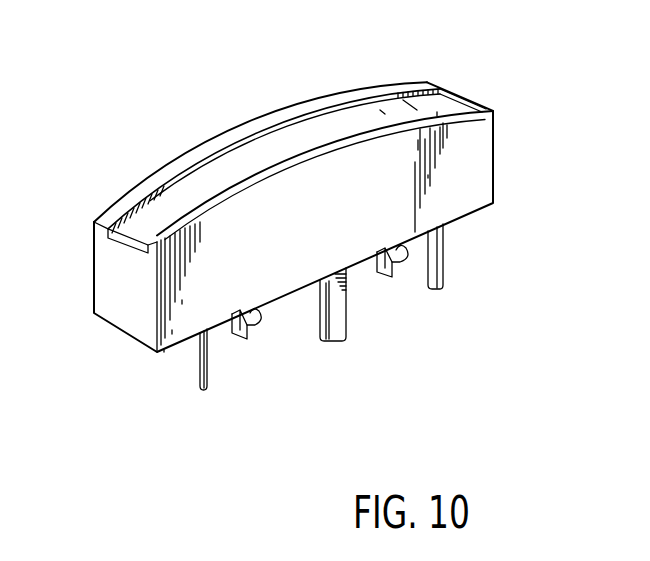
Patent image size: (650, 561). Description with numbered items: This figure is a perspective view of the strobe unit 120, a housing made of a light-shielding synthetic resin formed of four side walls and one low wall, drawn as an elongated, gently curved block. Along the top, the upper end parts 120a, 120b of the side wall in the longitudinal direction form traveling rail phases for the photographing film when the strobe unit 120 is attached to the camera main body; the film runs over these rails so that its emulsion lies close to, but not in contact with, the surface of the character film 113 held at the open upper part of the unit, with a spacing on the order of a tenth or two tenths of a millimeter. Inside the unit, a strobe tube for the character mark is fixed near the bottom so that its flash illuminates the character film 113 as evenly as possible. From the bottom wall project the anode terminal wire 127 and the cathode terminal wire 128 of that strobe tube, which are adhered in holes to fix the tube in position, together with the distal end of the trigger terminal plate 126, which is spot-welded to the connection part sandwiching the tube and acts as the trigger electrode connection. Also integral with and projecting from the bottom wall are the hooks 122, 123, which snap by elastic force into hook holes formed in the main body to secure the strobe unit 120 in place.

The character film 113 is at (357, 123).
The strobe unit 120 is at (468, 172).
The upper end part of side wall 120a is at (160, 175).
The upper end part of side wall 120b is at (445, 113).
The hook 122 is at (253, 340).
The hook 123 is at (400, 260).
The trigger terminal plate 126 is at (338, 327).
The anode terminal wire 127 is at (200, 370).
The cathode terminal wire 128 is at (443, 253).